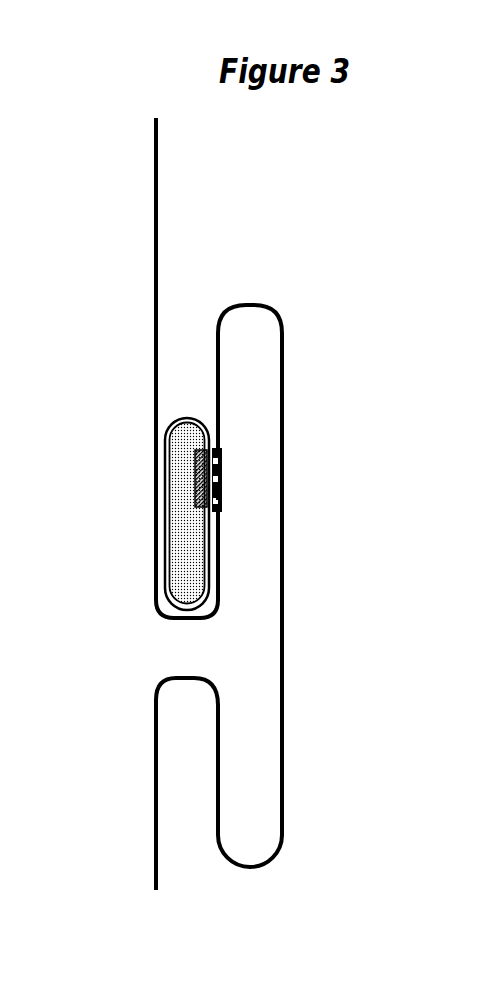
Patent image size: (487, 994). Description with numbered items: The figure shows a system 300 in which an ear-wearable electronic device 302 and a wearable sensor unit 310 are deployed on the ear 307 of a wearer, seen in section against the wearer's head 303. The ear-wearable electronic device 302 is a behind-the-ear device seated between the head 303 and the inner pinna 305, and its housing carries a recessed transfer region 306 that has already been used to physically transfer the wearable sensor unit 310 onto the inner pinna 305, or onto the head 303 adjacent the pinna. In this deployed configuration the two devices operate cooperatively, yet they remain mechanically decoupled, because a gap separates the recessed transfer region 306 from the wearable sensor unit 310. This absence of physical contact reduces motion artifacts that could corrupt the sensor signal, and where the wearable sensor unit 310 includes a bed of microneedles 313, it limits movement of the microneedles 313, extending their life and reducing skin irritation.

The system 300 is at (225, 504).
The ear-wearable electronic device 302 is at (155, 410).
The head 303 is at (133, 504).
The inner pinna 305 is at (282, 375).
The recessed transfer region 306 is at (184, 480).
The ear 307 is at (282, 747).
The wearable sensor unit 310 is at (231, 472).
The microneedles 313 is at (218, 495).